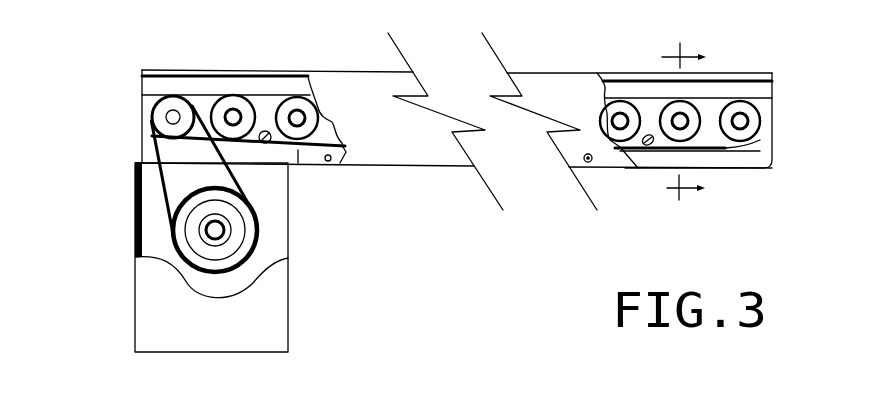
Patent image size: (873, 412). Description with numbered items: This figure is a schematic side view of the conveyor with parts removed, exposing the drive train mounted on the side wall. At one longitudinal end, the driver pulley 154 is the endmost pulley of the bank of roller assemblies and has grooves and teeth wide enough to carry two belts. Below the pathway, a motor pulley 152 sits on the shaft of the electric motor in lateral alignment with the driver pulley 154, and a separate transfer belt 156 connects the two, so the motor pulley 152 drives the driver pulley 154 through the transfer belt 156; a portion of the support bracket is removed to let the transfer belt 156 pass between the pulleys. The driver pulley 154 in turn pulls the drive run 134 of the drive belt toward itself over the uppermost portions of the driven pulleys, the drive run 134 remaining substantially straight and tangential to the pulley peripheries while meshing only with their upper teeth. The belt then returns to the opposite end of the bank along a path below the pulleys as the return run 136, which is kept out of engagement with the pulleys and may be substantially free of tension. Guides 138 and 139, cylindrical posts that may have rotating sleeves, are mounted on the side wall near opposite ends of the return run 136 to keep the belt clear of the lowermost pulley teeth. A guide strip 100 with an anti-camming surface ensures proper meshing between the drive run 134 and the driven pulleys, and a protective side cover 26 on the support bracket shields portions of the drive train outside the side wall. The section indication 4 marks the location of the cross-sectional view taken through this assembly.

The section line 4- 4 is at (684, 121).
The protective side cover 26 is at (553, 92).
The guide strip 100 is at (265, 87).
The drive run 134 is at (712, 106).
The return run 136 is at (720, 150).
The guide 138 is at (293, 165).
The guide 139 is at (631, 142).
The motor pulley 152 is at (182, 224).
The driver pulley 154 is at (152, 116).
The transfer belt 156 is at (138, 186).